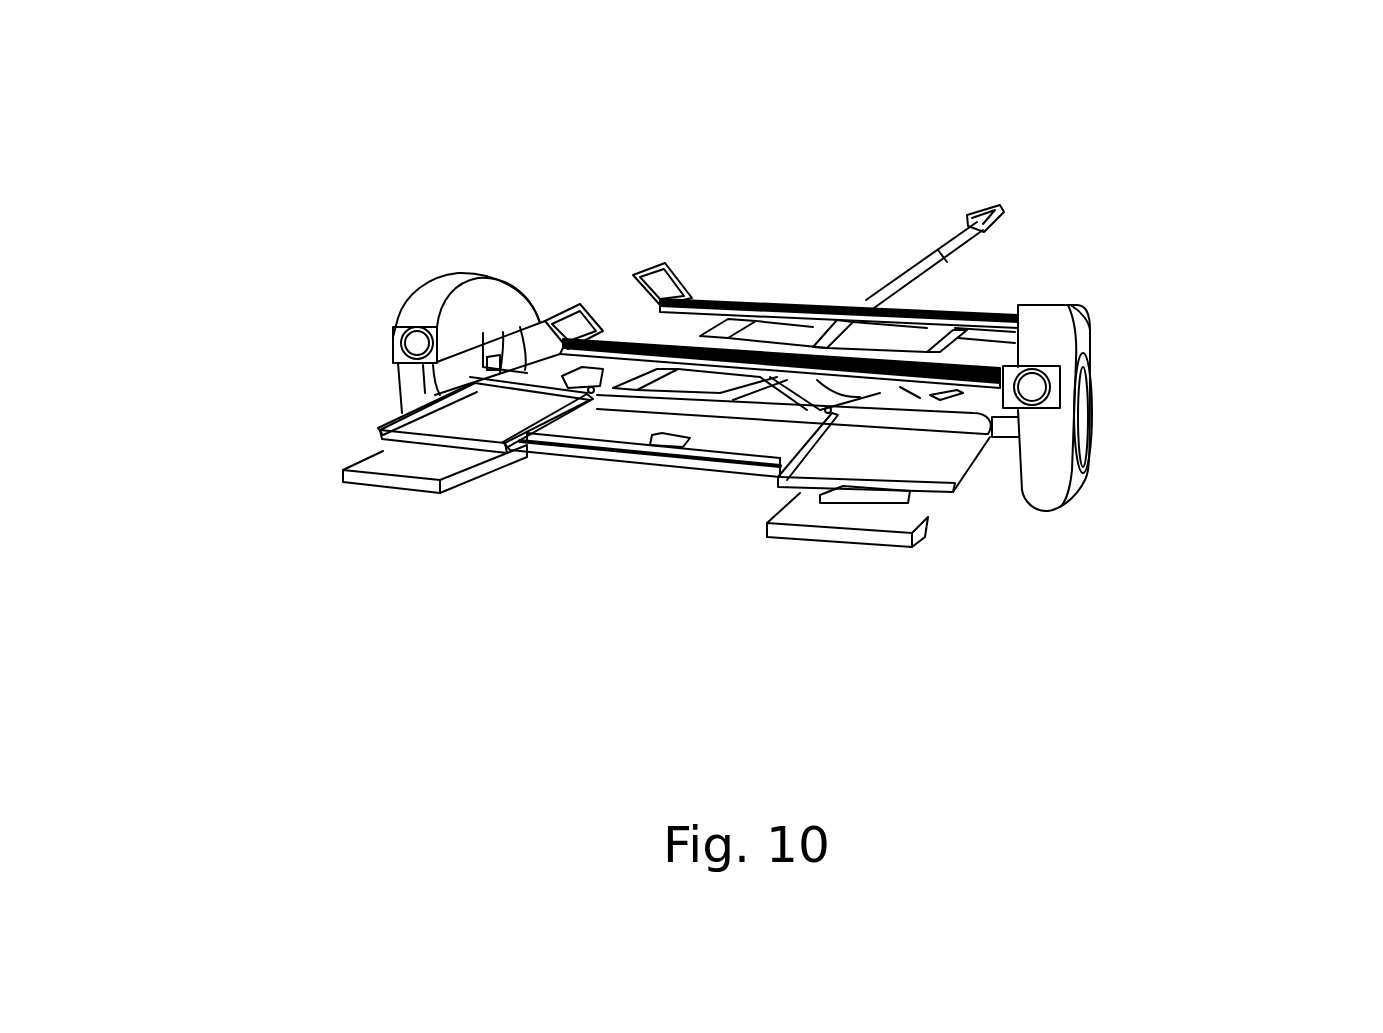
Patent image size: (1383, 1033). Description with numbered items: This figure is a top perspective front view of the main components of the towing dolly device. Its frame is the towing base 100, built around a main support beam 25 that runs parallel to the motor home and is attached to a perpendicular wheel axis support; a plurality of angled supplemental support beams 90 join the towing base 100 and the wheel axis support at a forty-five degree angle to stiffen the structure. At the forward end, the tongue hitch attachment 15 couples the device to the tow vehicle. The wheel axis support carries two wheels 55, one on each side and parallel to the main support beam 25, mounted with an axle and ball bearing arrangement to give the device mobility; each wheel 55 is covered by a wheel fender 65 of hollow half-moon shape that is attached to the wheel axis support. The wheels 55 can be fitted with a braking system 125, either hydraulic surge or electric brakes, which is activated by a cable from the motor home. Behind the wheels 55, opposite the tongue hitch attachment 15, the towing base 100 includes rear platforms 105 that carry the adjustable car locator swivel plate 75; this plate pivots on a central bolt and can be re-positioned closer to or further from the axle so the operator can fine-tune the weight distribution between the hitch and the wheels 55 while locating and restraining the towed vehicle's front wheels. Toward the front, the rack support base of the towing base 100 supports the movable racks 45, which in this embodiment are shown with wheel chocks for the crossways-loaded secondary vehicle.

The tongue hitch attachment 15 is at (982, 195).
The main support beam 25 is at (927, 262).
The movable racks 45 is at (709, 292).
The wheels 55 is at (415, 383).
The wheel fender 65 is at (414, 342).
The adjustable car locator swivel plate 75 is at (458, 430).
The angled supplemental support beams 90 is at (783, 390).
The towing base 100 is at (743, 277).
The rear platforms 105 is at (397, 483).
The braking system 125 is at (380, 430).